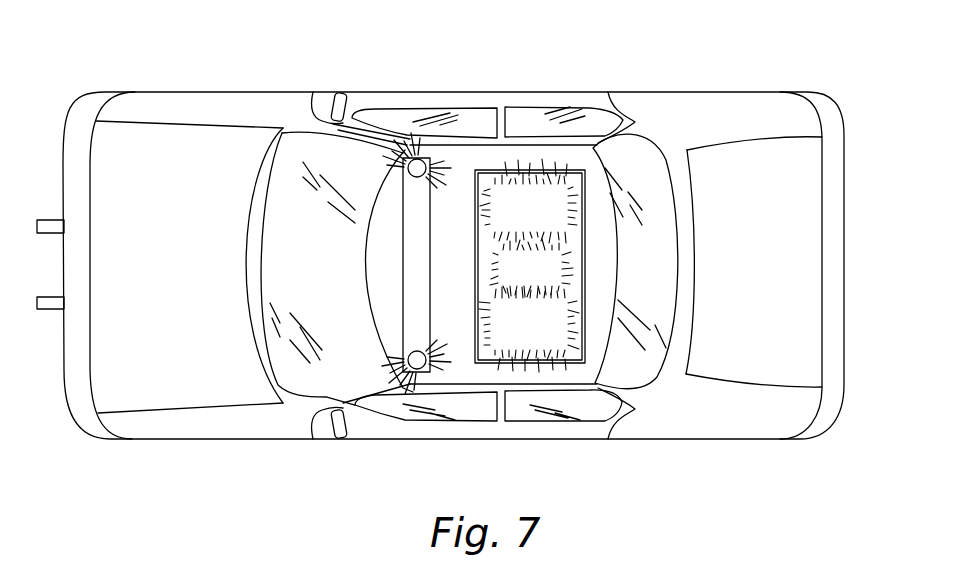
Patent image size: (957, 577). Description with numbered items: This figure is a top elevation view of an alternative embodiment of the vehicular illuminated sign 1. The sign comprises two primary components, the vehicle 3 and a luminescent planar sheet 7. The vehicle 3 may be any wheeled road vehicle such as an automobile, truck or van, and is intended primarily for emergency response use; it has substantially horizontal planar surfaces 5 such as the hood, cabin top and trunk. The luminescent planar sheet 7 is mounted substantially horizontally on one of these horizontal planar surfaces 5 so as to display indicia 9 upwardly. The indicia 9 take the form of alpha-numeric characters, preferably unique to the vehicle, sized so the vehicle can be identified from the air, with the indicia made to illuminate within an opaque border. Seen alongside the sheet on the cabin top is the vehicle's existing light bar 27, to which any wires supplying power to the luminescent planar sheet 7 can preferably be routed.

The vehicular illuminated sign 1 is at (722, 77).
The vehicle 3 is at (221, 97).
The horizontal planar surface 5 is at (455, 140).
The luminescent planar sheet 7 is at (573, 360).
The indicia 9 is at (497, 358).
The light bar 27 is at (411, 309).